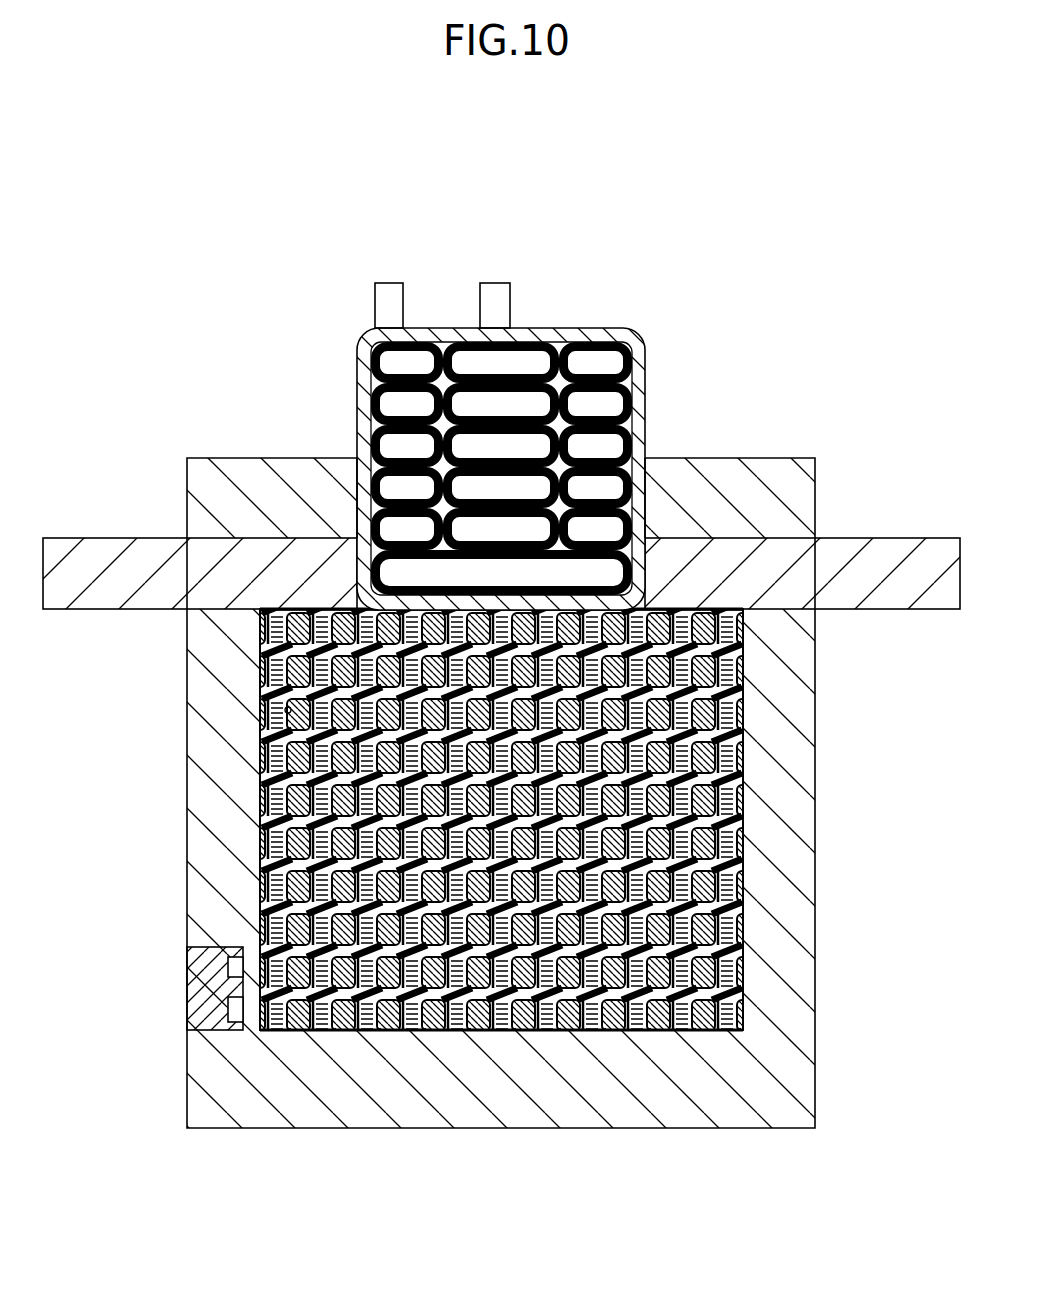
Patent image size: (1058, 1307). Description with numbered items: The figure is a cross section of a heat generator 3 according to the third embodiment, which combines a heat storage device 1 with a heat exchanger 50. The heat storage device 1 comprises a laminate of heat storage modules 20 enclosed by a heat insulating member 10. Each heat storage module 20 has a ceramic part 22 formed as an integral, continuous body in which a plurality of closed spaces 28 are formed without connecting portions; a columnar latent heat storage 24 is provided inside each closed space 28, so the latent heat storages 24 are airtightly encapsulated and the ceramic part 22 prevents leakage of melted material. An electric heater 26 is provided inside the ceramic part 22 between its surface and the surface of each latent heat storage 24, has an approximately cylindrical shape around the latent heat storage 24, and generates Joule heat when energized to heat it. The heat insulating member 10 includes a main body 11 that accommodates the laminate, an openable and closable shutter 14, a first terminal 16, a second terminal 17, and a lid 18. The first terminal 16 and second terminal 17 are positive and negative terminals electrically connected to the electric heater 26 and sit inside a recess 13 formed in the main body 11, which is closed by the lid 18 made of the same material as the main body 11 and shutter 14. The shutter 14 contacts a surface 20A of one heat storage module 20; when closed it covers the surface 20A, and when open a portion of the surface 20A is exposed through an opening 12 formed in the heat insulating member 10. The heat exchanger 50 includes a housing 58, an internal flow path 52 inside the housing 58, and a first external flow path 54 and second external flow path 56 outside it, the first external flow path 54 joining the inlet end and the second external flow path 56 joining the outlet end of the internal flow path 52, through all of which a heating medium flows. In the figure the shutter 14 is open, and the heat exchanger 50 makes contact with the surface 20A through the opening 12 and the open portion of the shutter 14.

The heat storage device 1 is at (206, 402).
The heat generator 3 is at (886, 222).
The heat insulating member 10 is at (276, 1150).
The main body 11 is at (269, 474).
The opening 12 is at (635, 468).
The recess 13 is at (228, 1030).
The shutter 14 is at (101, 553).
The first terminal 16 is at (228, 967).
The second terminal 17 is at (235, 1007).
The lid 18 is at (205, 990).
The heat storage module 20 is at (775, 798).
The surface 20A is at (593, 603).
The ceramic part 22 is at (740, 715).
The latent heat storage 24 is at (713, 700).
The electric heater 26 is at (740, 725).
The closed space 28 is at (284, 711).
The heat exchanger 50 is at (588, 419).
The internal flow path 52 is at (512, 382).
The first external flow path 54 is at (494, 283).
The second external flow path 56 is at (388, 283).
The housing 58 is at (601, 330).